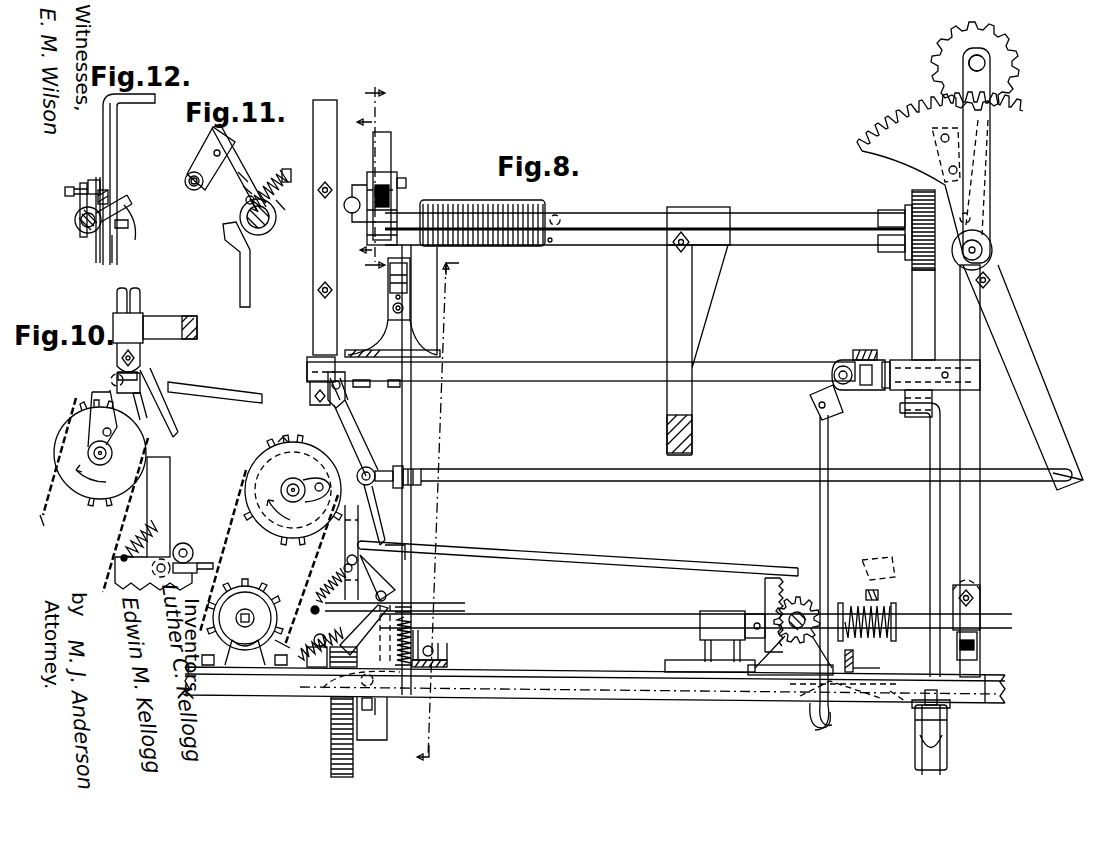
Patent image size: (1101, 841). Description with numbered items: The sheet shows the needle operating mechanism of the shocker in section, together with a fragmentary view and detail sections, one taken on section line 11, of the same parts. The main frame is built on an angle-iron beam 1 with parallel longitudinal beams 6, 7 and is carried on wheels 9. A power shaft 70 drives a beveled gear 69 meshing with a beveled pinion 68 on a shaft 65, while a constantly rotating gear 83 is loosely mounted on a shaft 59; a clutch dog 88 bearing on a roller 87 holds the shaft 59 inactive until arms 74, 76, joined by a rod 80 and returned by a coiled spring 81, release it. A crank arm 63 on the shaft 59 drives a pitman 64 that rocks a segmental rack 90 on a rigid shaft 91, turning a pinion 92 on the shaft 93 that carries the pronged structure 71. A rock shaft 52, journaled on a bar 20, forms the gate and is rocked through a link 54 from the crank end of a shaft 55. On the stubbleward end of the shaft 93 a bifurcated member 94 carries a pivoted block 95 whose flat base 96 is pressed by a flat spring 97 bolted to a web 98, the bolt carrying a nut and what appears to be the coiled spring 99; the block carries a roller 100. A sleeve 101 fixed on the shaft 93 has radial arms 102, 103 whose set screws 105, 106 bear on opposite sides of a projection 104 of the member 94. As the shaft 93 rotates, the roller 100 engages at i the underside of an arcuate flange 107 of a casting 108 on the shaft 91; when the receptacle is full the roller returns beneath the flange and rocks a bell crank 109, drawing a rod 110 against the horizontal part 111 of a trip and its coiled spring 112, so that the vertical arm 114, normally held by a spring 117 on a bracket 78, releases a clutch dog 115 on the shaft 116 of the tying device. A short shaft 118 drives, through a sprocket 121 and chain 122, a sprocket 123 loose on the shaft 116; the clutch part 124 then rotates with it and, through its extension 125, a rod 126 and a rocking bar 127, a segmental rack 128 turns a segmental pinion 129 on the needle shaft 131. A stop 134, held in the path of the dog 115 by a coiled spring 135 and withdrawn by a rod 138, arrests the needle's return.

In FIG. 8, the beam 1 is at (990, 705).
In FIG. 8, the longitudinal beam 6 is at (865, 672).
In FIG. 8, the beam 7 is at (445, 655).
In FIG. 8, the wheel 9 is at (446, 511).
In FIG. 8, the section line 11 is at (366, 178).
In FIG. 8, the bar 20 is at (850, 358).
In FIG. 8, the shaft 52 is at (848, 395).
In FIG. 8, the link 54 is at (828, 520).
In FIG. 8, the shaft 55 is at (800, 702).
In FIG. 8, the shaft 59 is at (618, 702).
In FIG. 8, the crank arm 63 is at (905, 725).
In FIG. 8, the pitman 64 is at (937, 557).
In FIG. 8, the shaft 65 is at (793, 640).
In FIG. 8, the beveled pinion 68 is at (797, 600).
In FIG. 8, the beveled gear 69 is at (768, 598).
In FIG. 8, the power shaft 70 is at (608, 628).
In FIG. 8, the pronged structure 71 is at (690, 428).
In FIG. 8, the arm 74 is at (868, 566).
In FIG. 8, the arm 76 is at (390, 586).
In FIG. 10, the bracket 78 is at (133, 582).
In FIG. 8, the bracket 78 is at (283, 635).
In FIG. 8, the rod connection 80 is at (612, 566).
In FIG. 8, the coiled spring 81 is at (318, 650).
In FIG. 8, the gear 83 is at (353, 755).
In FIG. 8, the roller 87 is at (340, 655).
In FIG. 8, the clutch dog 88 is at (373, 705).
In FIG. 8, the segmental rack 90 is at (915, 302).
In FIG. 10, the rigid shaft 91 is at (180, 332).
In FIG. 8, the rigid shaft 91 is at (780, 383).
In FIG. 8, the pinion 92 is at (910, 196).
In FIG. 12, the shaft 93 is at (78, 228).
In FIG. 11, the shaft 93 is at (262, 236).
In FIG. 8, the shaft 93 is at (846, 240).
In FIG. 11, the bifurcated member 94 is at (242, 178).
In FIG. 8, the bifurcated member 94 is at (392, 207).
In FIG. 11, the block 95 is at (198, 162).
In FIG. 11, the flat base 96 is at (226, 168).
In FIG. 11, the flat spring 97 is at (248, 186).
In FIG. 8, the flat spring 97 is at (385, 143).
In FIG. 11, the web 98 is at (247, 190).
In FIG. 11, the collar 99 is at (248, 198).
In FIG. 8, the collar 99 is at (392, 185).
In FIG. 11, the roller 100 is at (188, 187).
In FIG. 8, the roller 100 is at (400, 183).
In FIG. 12, the sleeve 101 is at (78, 221).
In FIG. 11, the sleeve 101 is at (252, 268).
In FIG. 12, the radial arm 102 is at (92, 184).
In FIG. 11, the radial arm 102 is at (310, 212).
In FIG. 12, the radial arm 103 is at (133, 232).
In FIG. 12, the projection 104 is at (115, 188).
In FIG. 8, the projection 104 is at (360, 198).
In FIG. 12, the set screw 105 is at (66, 193).
In FIG. 8, the set screw 105 is at (348, 200).
In FIG. 12, the set screw 106 is at (113, 258).
In FIG. 8, the arcuate flange 107 is at (395, 283).
In FIG. 8, the casting 108 is at (412, 299).
In FIG. 8, the bell crank 109 is at (392, 322).
In FIG. 8, the rod 110 is at (405, 435).
In FIG. 10, the horizontal part 111 is at (200, 566).
In FIG. 8, the horizontal part 111 is at (418, 609).
In FIG. 8, the coiled spring 112 is at (410, 665).
In FIG. 10, the vertical arm 114 is at (165, 516).
In FIG. 8, the vertical arm 114 is at (356, 542).
In FIG. 10, the clutch dog 115 is at (124, 392).
In FIG. 8, the clutch dog 115 is at (400, 490).
In FIG. 10, the shaft 116 is at (88, 452).
In FIG. 8, the shaft 116 is at (285, 486).
In FIG. 10, the spring 117 is at (125, 548).
In FIG. 8, the spring 117 is at (317, 588).
In FIG. 8, the short shaft 118 is at (244, 630).
In FIG. 8, the sprocket 121 is at (245, 622).
In FIG. 10, the chain 122 is at (62, 418).
In FIG. 8, the chain 122 is at (230, 540).
In FIG. 10, the sprocket 123 is at (44, 518).
In FIG. 8, the sprocket 123 is at (283, 437).
In FIG. 10, the clutch part 124 is at (112, 453).
In FIG. 8, the clutch part 124 is at (328, 481).
In FIG. 10, the extension 125 is at (97, 400).
In FIG. 8, the extension 125 is at (355, 462).
In FIG. 10, the rod 126 is at (245, 380).
In FIG. 8, the rod 126 is at (620, 468).
In FIG. 8, the rocking bar 127 is at (1020, 352).
In FIG. 8, the segmental rack 128 is at (878, 138).
In FIG. 8, the segmental pinion 129 is at (930, 72).
In FIG. 8, the needle shaft 131 is at (986, 62).
In FIG. 8, the stop 134 is at (345, 413).
In FIG. 10, the coiled spring 135 is at (147, 410).
In FIG. 8, the coiled spring 135 is at (324, 400).
In FIG. 8, the rod 138 is at (400, 456).
In FIG. 8, the engagement point i is at (395, 297).